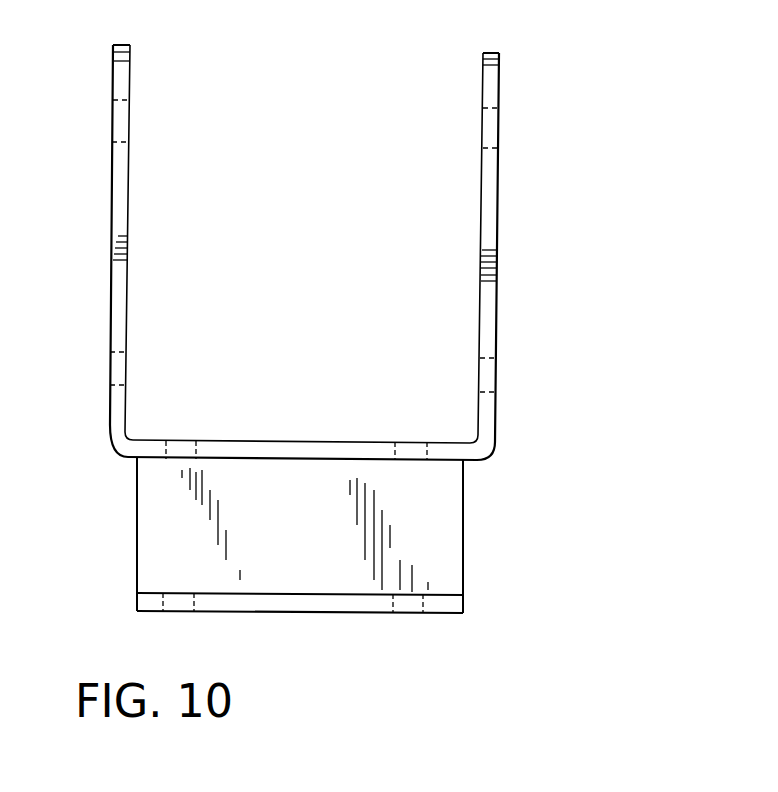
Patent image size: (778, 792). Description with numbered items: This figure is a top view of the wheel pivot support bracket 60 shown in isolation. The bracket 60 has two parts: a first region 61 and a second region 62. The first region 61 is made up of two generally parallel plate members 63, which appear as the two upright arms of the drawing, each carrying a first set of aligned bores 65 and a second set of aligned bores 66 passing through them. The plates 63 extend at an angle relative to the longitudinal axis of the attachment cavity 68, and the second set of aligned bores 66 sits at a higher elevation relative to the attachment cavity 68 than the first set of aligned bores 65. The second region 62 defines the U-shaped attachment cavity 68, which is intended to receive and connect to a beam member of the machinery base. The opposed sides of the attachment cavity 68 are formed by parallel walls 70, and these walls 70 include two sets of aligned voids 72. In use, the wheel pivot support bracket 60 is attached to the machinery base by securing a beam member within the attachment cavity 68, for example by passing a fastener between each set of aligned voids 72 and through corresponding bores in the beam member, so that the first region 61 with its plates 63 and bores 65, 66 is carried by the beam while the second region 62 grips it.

The wheel pivot support bracket 60 is at (619, 86).
The first region 61 is at (321, 252).
The second region 62 is at (369, 535).
The plate members 63 is at (490, 207).
The first set of aligned bores 65 is at (485, 367).
The second set of aligned bores 66 is at (500, 117).
The attachment cavity 68 is at (318, 537).
The parallel walls 70 is at (440, 452).
The aligned voids 72 is at (183, 440).